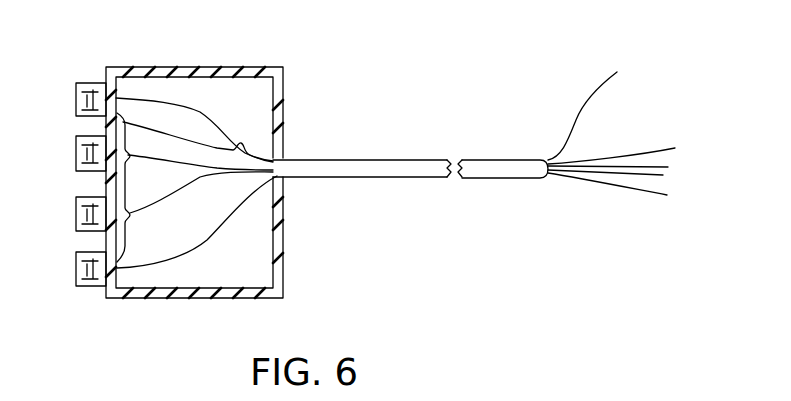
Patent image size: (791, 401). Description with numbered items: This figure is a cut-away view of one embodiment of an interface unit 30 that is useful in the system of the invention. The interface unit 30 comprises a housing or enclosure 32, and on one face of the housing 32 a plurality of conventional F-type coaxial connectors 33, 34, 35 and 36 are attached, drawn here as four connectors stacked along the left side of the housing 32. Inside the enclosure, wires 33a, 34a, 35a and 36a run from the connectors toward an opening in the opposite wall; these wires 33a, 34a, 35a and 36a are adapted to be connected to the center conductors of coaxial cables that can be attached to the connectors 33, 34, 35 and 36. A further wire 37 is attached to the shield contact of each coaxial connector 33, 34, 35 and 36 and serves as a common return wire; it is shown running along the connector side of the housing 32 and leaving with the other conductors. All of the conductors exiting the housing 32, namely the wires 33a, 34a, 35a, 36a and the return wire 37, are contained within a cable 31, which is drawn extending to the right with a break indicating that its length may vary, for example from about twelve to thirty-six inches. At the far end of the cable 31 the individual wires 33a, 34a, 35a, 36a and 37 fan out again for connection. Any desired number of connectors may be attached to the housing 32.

The interface unit 30 is at (352, 46).
The cable 31 is at (373, 181).
The housing 32 is at (236, 67).
The coaxial connector 33 is at (76, 99).
The coaxial connector 34 is at (76, 157).
The coaxial connector 35 is at (76, 213).
The coaxial connector 36 is at (76, 267).
The wire 37 is at (128, 237).
The wire 33a is at (614, 153).
The wire 34a is at (648, 164).
The wire 35a is at (645, 182).
The wire 36a is at (618, 189).